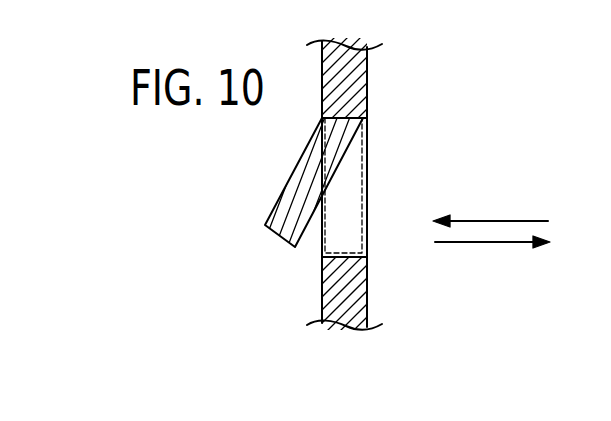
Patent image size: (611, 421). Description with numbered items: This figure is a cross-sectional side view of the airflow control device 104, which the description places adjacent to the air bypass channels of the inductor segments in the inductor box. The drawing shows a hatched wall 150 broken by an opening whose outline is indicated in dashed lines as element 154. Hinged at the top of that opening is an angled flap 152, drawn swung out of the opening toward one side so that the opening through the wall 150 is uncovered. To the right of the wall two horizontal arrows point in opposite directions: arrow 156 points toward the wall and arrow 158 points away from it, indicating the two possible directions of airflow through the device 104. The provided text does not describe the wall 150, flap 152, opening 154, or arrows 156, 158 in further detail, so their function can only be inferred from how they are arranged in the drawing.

The airflow control device 104 is at (463, 108).
The wall 150 is at (321, 296).
The flap 152 is at (283, 197).
The opening 154 is at (355, 202).
The first flow direction arrow 156 is at (498, 218).
The second flow direction arrow 158 is at (487, 245).